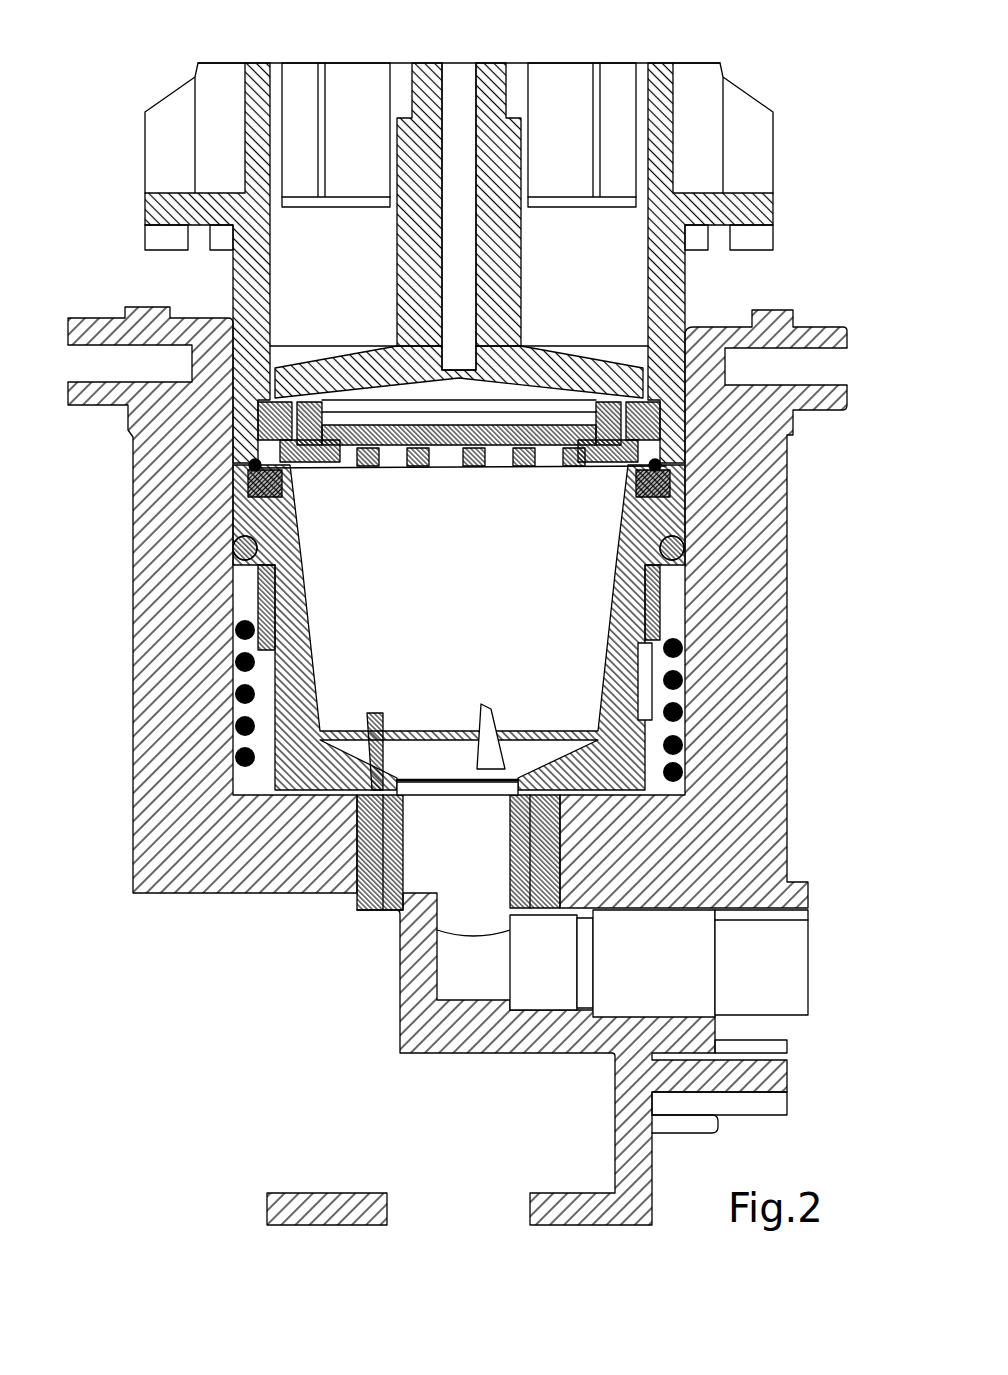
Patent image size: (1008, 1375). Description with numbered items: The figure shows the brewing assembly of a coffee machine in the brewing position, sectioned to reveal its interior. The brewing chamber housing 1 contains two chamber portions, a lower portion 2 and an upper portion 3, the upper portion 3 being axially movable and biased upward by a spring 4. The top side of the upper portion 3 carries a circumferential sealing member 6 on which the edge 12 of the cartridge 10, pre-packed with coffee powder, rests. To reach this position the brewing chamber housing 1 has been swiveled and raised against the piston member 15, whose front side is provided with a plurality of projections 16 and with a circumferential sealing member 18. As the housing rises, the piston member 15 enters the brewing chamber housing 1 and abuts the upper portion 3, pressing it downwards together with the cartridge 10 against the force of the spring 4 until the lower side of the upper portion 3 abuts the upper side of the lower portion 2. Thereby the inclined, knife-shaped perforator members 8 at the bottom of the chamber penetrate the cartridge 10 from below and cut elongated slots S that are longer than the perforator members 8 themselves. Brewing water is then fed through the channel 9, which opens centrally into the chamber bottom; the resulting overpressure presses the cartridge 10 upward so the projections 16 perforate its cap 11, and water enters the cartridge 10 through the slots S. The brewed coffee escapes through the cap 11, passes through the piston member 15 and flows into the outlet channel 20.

The brewing chamber housing 1 is at (835, 730).
The lower portion of the brewing chamber 2 is at (297, 712).
The upper portion of the brewing chamber 3 is at (262, 587).
The spring 4 is at (240, 662).
The circumferential sealing member 6 is at (292, 490).
The perforator members 8 is at (480, 727).
The channel 9 is at (765, 968).
The cartridge 10 is at (450, 617).
The cap 11 is at (546, 470).
The edge of the cartridge 12 is at (266, 455).
The piston member 15 is at (808, 183).
The projections 16 is at (443, 470).
The circumferential sealing member 18 is at (660, 466).
The outlet channel 20 is at (453, 148).
The slots S is at (458, 724).